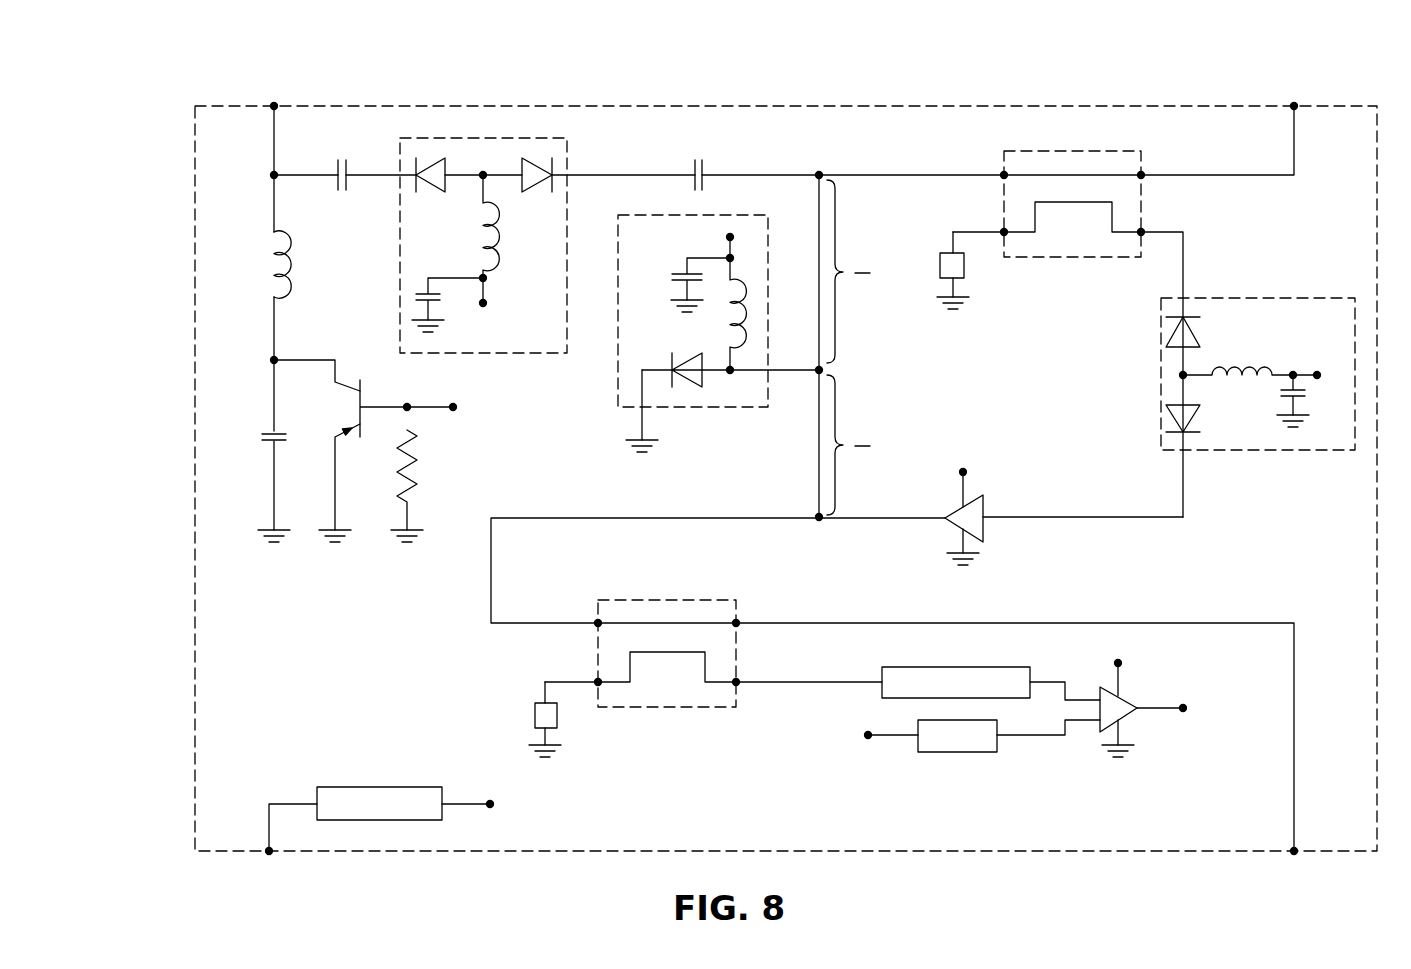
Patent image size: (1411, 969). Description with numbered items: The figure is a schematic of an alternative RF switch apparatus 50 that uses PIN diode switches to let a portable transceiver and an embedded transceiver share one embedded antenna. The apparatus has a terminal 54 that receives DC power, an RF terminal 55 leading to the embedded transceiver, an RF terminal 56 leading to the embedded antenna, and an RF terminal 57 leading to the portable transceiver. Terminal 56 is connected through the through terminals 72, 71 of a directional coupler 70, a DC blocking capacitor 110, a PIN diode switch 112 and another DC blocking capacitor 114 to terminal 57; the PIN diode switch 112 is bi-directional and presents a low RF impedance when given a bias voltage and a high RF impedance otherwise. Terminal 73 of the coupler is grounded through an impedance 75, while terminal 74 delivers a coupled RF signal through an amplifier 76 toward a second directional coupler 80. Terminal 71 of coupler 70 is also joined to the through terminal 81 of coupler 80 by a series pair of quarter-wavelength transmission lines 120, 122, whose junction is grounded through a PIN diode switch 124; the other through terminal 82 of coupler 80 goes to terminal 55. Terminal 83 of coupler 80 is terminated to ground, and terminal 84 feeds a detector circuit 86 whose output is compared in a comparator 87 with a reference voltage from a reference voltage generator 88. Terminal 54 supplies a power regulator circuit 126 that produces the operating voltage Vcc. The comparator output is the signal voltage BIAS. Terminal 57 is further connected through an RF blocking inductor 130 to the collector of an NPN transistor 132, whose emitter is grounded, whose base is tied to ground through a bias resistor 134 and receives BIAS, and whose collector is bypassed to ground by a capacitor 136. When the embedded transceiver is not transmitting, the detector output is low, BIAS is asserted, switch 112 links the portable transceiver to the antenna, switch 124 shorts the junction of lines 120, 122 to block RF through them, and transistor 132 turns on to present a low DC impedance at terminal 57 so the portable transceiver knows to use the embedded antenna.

The RF switch apparatus 50 is at (812, 82).
The terminal 54 is at (269, 851).
The RF terminal 55 is at (1294, 851).
The RF terminal 56 is at (1294, 106).
The RF terminal 57 is at (274, 106).
The directional coupler 70 is at (1084, 141).
The through terminal 71 is at (1004, 175).
The through terminal 72 is at (1141, 175).
The terminal 73 is at (1004, 232).
The terminal 74 is at (1141, 232).
The impedance 75 is at (939, 265).
The amplifier 76 is at (985, 538).
The directional coupler 80 is at (671, 717).
The through terminal 81 is at (598, 623).
The through terminal 82 is at (736, 623).
The terminal 83 is at (598, 682).
The terminal 84 is at (736, 682).
The detector circuit 86 is at (865, 684).
The comparator 87 is at (1260, 480).
The reference voltage generator 88 is at (985, 752).
The DC blocking capacitor 110 is at (705, 165).
The PIN diode switch 112 is at (582, 144).
The DC blocking capacitor 114 is at (348, 170).
The quarter wavelength transmission line 120 is at (840, 317).
The quarter wavelength transmission line 122 is at (819, 450).
The PIN diode switch 124 is at (708, 425).
The power regulator circuit 126 is at (357, 787).
The RF blocking inductor 130 is at (265, 263).
The NPN transistor 132 is at (345, 385).
The bias resistor 134 is at (420, 470).
The capacitor 136 is at (265, 437).